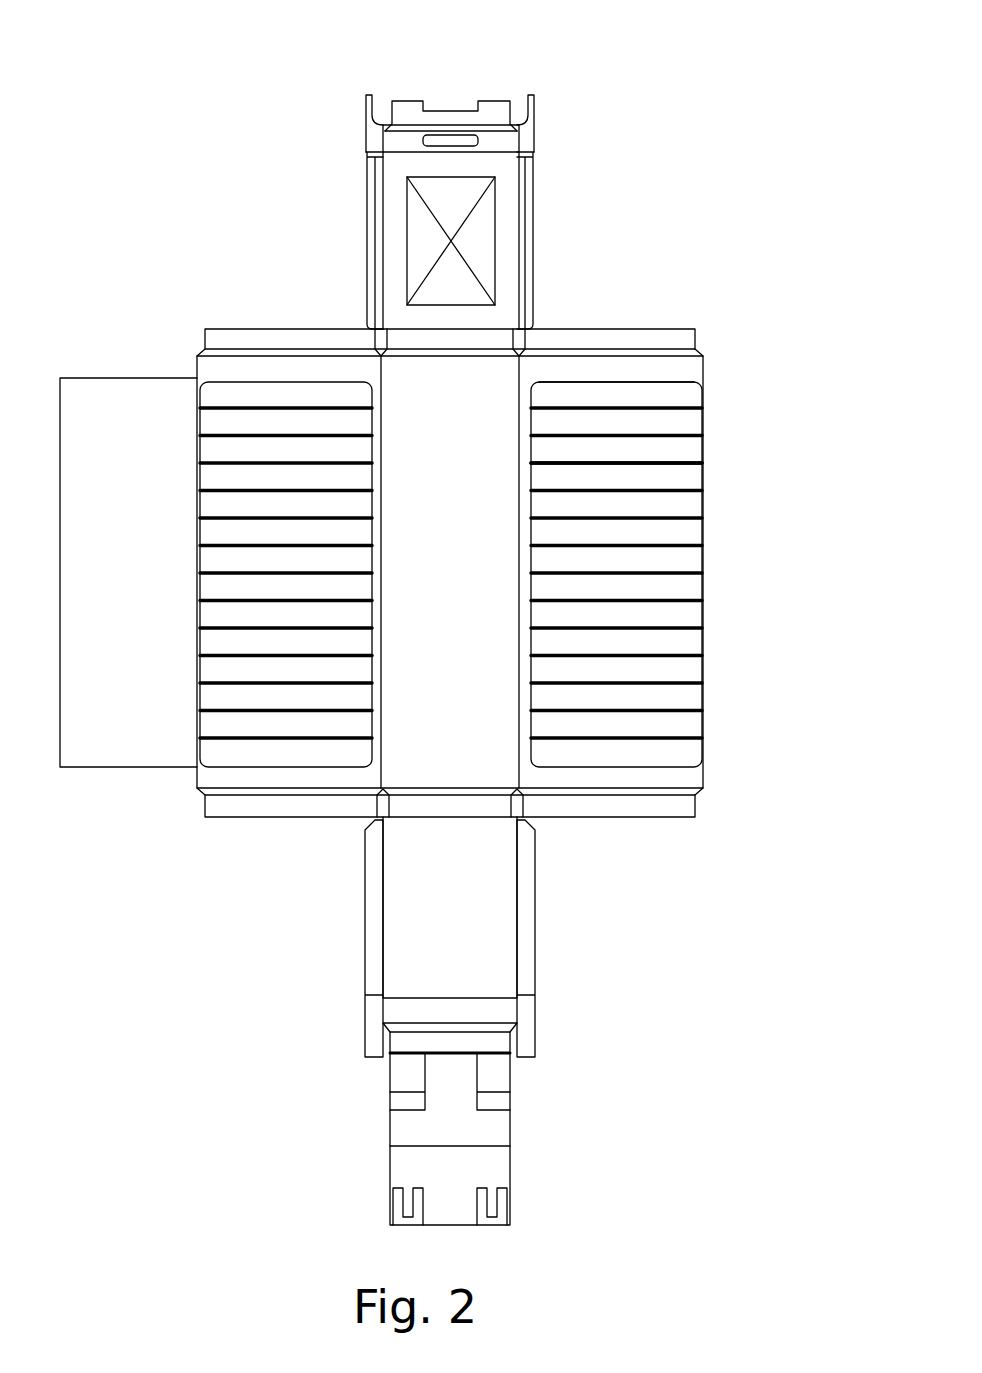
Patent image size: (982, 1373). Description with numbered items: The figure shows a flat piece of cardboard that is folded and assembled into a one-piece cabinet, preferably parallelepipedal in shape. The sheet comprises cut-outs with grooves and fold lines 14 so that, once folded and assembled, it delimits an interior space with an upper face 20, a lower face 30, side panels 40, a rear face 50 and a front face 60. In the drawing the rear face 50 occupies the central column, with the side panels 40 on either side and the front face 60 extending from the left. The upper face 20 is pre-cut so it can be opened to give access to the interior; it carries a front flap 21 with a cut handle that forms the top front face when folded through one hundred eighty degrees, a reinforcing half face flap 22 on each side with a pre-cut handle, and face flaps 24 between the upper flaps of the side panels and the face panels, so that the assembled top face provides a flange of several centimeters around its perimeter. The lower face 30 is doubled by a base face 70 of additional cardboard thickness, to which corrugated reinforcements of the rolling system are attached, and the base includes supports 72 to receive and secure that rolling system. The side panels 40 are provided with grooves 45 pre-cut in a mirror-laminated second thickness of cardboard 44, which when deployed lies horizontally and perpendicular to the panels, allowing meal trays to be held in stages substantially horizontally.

The fold lines 14 is at (237, 345).
The upper face 20 is at (527, 290).
The front flap 21 is at (493, 108).
The reinforcing half face flap 22 is at (533, 108).
The face flaps 24 is at (527, 197).
The lower face 30 is at (502, 912).
The side panels 40 is at (207, 400).
The second thickness of cardboard 44 is at (693, 472).
The grooves 45 is at (695, 403).
The rear face 50 is at (393, 380).
The front face 60 is at (118, 730).
The base face 70 is at (505, 1200).
The supports 72 is at (497, 1103).